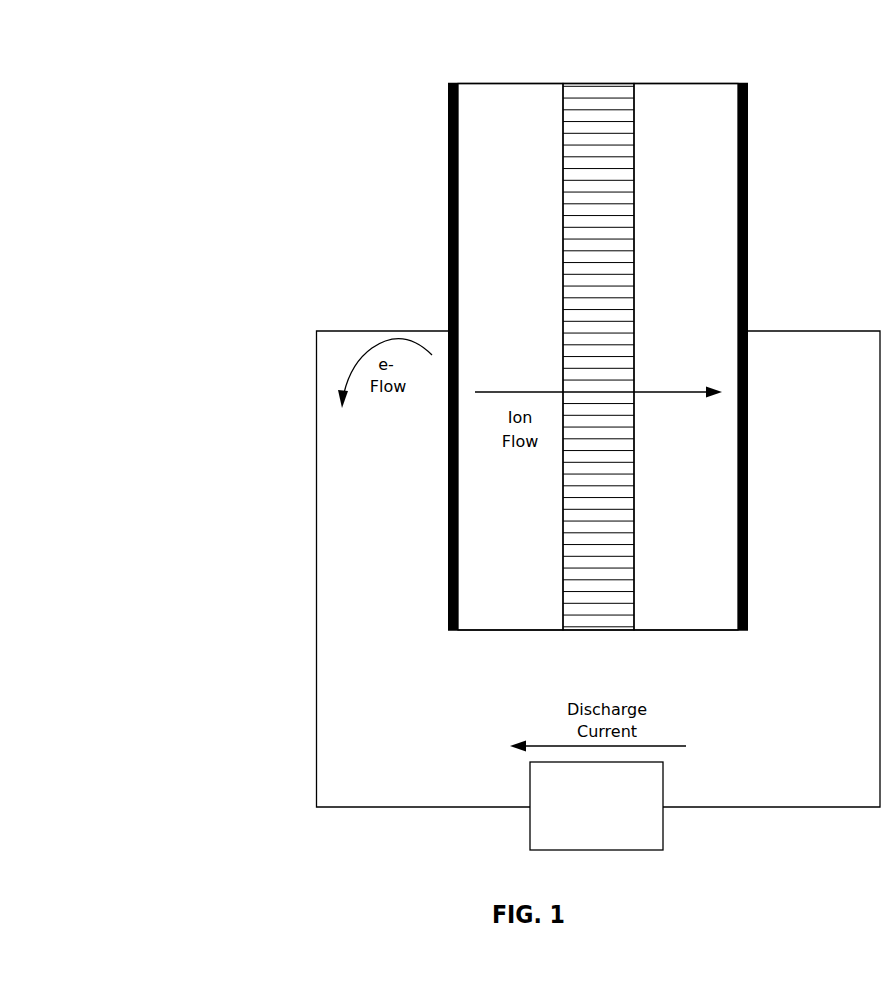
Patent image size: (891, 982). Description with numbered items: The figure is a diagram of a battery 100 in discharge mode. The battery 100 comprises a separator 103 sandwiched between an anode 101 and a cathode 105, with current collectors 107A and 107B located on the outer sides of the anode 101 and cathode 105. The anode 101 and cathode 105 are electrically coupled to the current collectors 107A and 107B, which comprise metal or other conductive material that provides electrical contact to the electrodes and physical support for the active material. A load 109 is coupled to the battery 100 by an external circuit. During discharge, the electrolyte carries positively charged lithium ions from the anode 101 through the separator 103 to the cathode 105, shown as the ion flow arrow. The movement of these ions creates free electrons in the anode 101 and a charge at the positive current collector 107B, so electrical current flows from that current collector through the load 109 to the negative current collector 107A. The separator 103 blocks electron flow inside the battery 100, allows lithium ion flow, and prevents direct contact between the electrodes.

The battery 100 is at (138, 177).
The anode 101 is at (530, 296).
The separator 103 is at (600, 83).
The cathode 105 is at (706, 296).
The negative current collector 107A is at (447, 100).
The positive current collector 107B is at (748, 108).
The load 109 is at (577, 832).